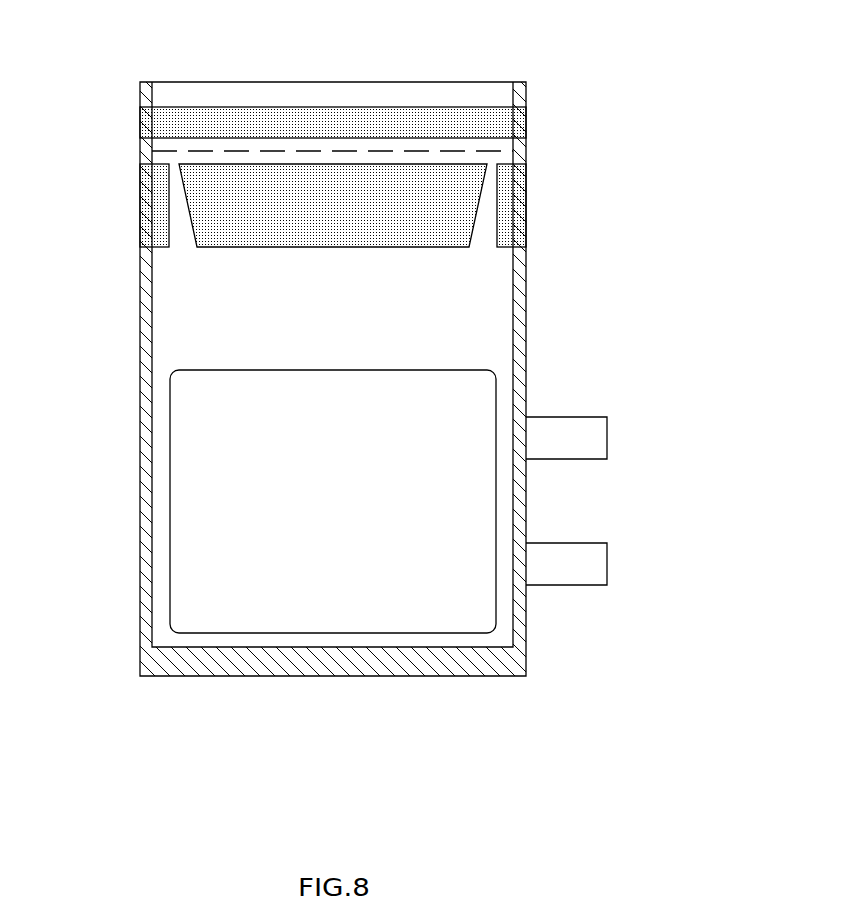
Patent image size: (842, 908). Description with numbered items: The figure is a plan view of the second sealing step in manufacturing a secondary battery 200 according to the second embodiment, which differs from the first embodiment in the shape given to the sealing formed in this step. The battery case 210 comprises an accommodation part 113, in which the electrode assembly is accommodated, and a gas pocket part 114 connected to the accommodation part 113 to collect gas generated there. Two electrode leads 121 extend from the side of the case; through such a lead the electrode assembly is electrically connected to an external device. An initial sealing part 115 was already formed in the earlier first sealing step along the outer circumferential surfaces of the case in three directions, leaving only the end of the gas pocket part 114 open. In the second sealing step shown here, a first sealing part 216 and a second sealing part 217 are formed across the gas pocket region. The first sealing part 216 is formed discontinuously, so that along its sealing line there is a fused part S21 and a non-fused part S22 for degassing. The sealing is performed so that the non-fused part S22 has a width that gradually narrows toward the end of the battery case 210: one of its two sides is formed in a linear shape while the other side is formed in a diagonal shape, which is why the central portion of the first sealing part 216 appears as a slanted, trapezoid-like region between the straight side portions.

The secondary battery 200 is at (672, 34).
The battery case 210 is at (327, 399).
The second sealing part 217 is at (490, 120).
The first sealing part 216 is at (445, 218).
The fused part S21 is at (186, 200).
The non-fused part for degassing S22 is at (180, 230).
The gas pocket part 114 is at (190, 304).
The initial sealing part 115 is at (170, 667).
The accommodation part 113 is at (333, 610).
The electrode lead 121 is at (570, 578).